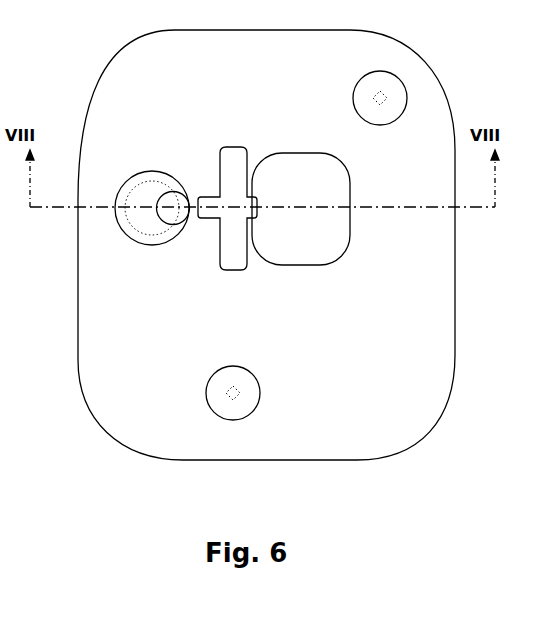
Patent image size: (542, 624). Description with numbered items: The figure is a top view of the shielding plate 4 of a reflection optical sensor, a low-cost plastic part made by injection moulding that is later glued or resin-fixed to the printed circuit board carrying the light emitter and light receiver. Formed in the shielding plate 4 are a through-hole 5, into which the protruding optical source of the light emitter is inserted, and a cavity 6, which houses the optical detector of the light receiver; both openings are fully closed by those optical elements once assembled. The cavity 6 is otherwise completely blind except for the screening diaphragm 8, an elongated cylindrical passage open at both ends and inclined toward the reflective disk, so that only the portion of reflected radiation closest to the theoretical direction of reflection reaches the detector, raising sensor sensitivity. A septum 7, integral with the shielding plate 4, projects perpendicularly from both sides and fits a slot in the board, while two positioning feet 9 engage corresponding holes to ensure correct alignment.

The shielding plate 4 is at (408, 367).
The through-hole 5 is at (309, 228).
The cavity 6 is at (127, 228).
The septum 7 is at (233, 162).
The screening diaphragm 8 is at (178, 196).
The positioning feet 9 is at (392, 88).